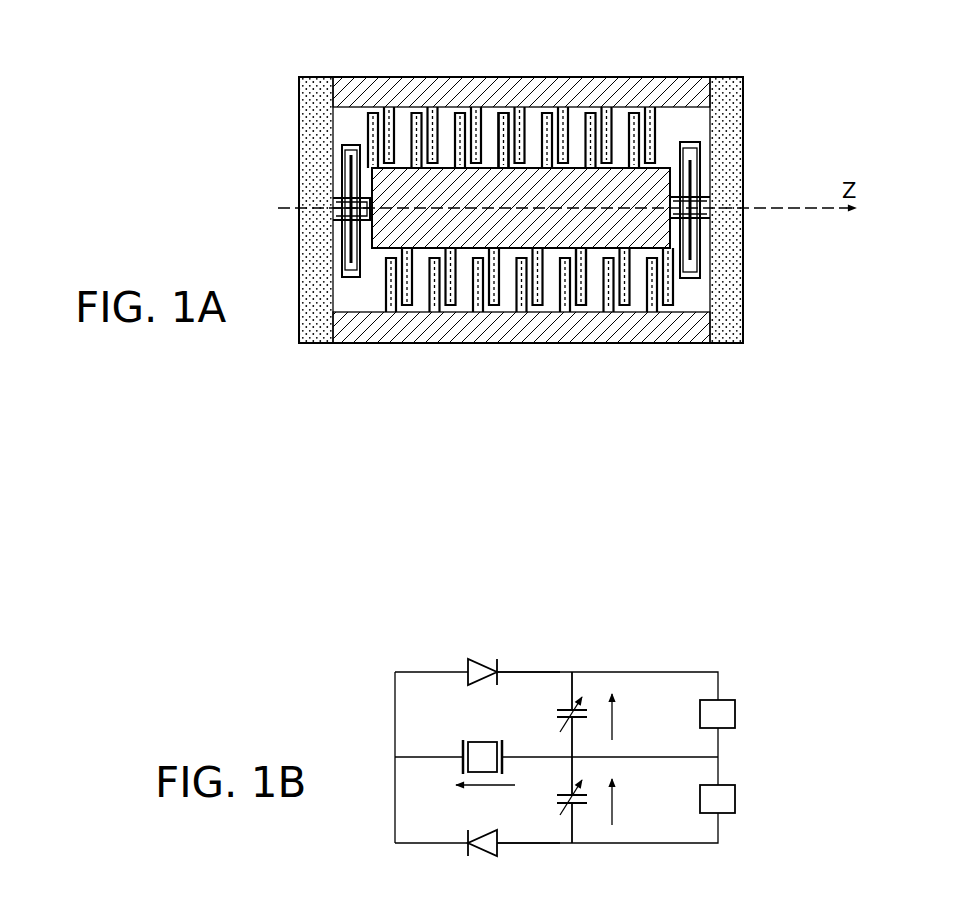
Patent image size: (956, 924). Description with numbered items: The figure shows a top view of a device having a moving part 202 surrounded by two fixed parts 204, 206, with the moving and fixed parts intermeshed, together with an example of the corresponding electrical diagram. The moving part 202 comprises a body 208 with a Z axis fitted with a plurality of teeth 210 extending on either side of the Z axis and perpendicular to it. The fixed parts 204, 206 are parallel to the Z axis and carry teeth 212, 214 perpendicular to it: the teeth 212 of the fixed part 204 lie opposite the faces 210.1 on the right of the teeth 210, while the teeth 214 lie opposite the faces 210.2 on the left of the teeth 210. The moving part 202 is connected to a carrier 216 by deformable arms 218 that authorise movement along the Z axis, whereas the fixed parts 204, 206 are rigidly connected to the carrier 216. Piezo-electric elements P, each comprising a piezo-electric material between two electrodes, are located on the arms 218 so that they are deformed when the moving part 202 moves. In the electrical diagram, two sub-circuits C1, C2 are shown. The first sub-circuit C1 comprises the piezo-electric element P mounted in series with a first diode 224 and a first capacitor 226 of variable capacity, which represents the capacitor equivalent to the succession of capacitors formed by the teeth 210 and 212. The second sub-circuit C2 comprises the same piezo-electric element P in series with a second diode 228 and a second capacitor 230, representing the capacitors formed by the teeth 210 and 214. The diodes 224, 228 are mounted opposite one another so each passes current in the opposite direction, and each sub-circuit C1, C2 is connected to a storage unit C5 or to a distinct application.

In FIG. 1A, the moving part 202 is at (446, 162).
In FIG. 1A, the fixed part 204 is at (478, 74).
In FIG. 1A, the fixed part 206 is at (458, 348).
In FIG. 1A, the body 208 is at (385, 250).
In FIG. 1A, the teeth 210 is at (645, 110).
In FIG. 1A, the faces 210.1 is at (513, 108).
In FIG. 1A, the faces 210.2 is at (585, 295).
In FIG. 1A, the teeth 212 is at (612, 117).
In FIG. 1A, the teeth 214 is at (565, 300).
In FIG. 1A, the carrier 216 is at (728, 133).
In FIG. 1A, the deformable arms 218 is at (533, 157).
In FIG. 1A, the piezo-electric element P is at (342, 165).
In FIG. 1B, the piezo-electric element P is at (482, 750).
In FIG. 1B, the first diode 224 is at (485, 668).
In FIG. 1B, the first capacitor 226 is at (588, 706).
In FIG. 1B, the second diode 228 is at (487, 853).
In FIG. 1B, the second capacitor 230 is at (582, 806).
In FIG. 1B, the first sub-circuit C1 is at (554, 660).
In FIG. 1B, the second sub-circuit C2 is at (556, 850).
In FIG. 1B, the storage unit C5 is at (722, 718).